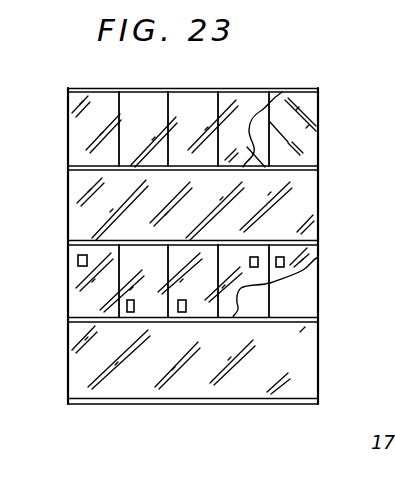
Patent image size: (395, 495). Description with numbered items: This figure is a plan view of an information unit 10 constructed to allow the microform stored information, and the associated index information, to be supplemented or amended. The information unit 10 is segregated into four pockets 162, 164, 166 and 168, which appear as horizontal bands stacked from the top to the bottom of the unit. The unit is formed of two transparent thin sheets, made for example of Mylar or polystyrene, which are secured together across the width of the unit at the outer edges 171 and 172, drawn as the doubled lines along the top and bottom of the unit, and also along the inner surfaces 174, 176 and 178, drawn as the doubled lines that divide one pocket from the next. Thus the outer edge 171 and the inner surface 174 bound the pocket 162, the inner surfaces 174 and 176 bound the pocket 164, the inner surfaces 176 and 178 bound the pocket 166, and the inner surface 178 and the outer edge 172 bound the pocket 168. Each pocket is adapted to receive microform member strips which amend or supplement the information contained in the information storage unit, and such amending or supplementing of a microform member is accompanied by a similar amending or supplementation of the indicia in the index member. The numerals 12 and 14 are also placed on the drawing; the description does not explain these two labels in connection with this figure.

The information unit 10 is at (331, 125).
The glass sheet 12 is at (298, 103).
The second glass sheet 14 is at (306, 299).
The pocket 162 is at (78, 141).
The pocket 164 is at (78, 212).
The pocket 166 is at (78, 289).
The pocket 168 is at (78, 367).
The outer edge 171 is at (233, 88).
The outer edge 172 is at (233, 404).
The inner surface 174 is at (320, 172).
The inner surface 176 is at (316, 243).
The inner surface 178 is at (299, 323).